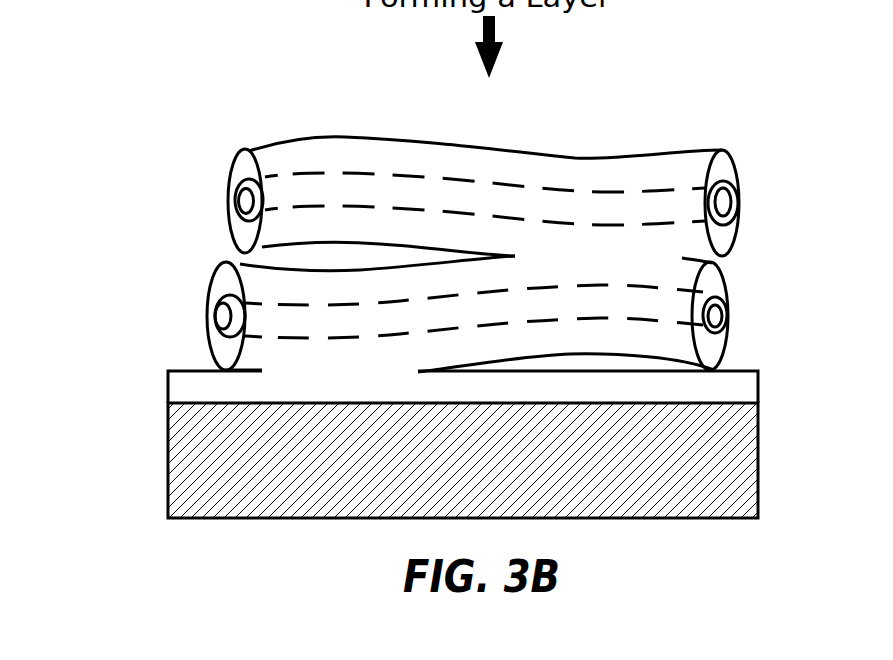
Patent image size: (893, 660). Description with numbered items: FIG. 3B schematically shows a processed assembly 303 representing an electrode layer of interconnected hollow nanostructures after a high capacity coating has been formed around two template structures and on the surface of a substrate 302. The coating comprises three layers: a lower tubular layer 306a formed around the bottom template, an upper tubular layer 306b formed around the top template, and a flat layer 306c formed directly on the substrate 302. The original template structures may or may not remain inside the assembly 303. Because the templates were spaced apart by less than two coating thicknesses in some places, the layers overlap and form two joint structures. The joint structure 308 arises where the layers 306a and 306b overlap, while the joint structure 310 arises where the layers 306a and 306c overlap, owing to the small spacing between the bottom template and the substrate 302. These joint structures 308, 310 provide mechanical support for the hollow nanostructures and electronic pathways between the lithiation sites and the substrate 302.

The substrate 302 is at (183, 460).
The processed assembly 303 is at (389, 187).
The coating layer 306a is at (212, 275).
The coating layer 306b is at (240, 163).
The coating layer 306c is at (195, 387).
The joint structure 308 is at (598, 238).
The joint structure 310 is at (331, 378).